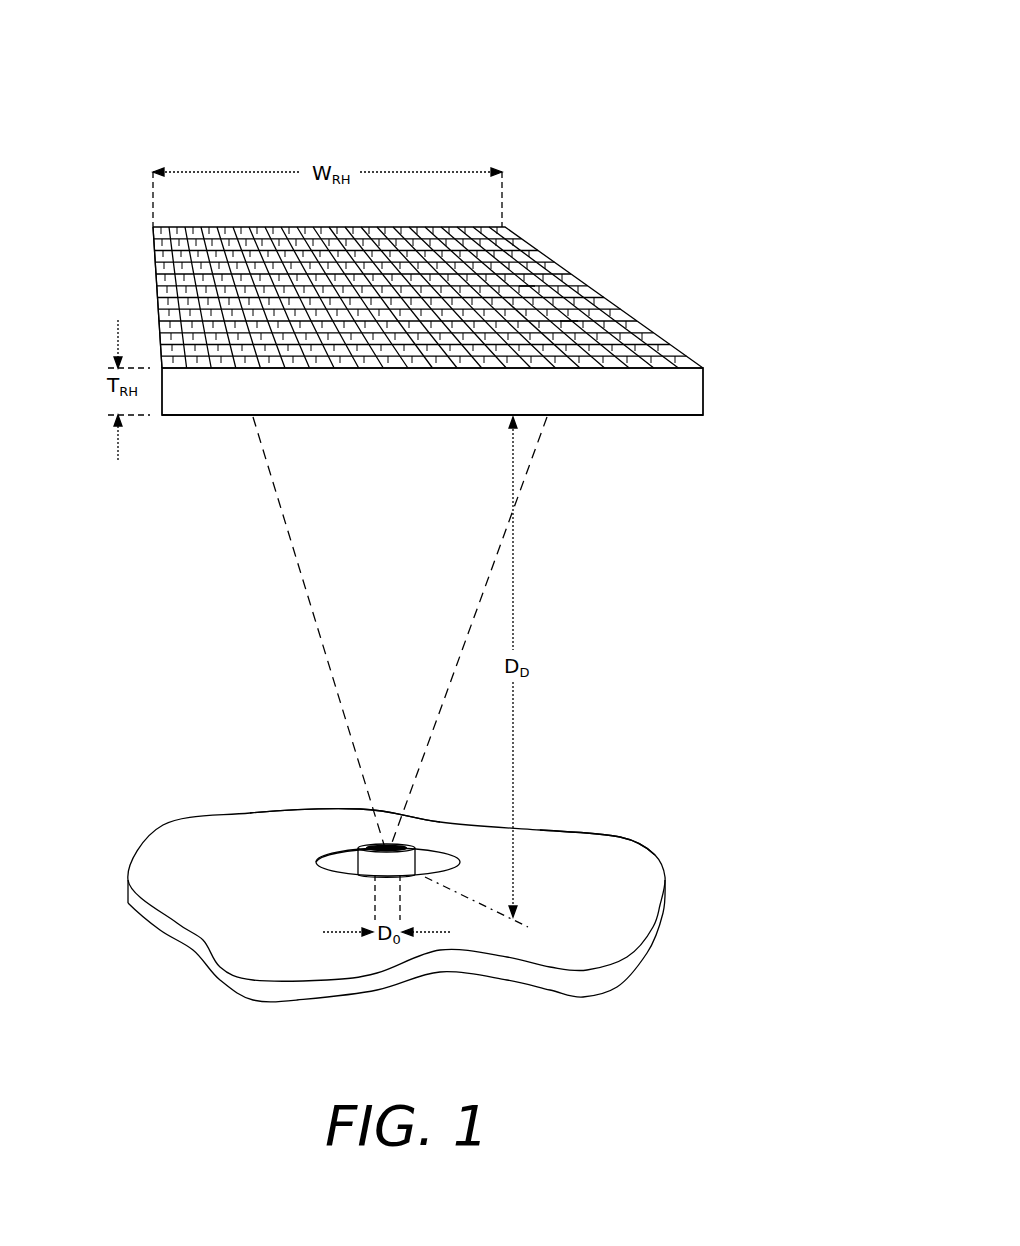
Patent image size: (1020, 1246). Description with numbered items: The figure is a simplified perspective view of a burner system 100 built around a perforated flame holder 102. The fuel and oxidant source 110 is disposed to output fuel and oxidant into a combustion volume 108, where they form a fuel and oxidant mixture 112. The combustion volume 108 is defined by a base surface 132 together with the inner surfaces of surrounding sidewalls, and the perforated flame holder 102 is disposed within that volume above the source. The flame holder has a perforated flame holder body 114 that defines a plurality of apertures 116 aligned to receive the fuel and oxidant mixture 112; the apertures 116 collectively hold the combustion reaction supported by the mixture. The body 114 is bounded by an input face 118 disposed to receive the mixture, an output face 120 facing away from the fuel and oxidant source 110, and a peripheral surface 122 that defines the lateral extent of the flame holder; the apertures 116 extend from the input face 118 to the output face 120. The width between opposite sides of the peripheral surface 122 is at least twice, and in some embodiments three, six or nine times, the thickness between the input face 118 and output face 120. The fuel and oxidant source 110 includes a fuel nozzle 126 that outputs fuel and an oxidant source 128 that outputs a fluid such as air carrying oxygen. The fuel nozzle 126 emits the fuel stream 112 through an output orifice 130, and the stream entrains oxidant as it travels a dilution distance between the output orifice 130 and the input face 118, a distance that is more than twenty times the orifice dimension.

The burner system 100 is at (582, 38).
The perforated flame holder 102 is at (703, 393).
The combustion volume 108 is at (116, 704).
The fuel and oxidant source 110 is at (305, 830).
The fuel and oxidant mixture 112 is at (338, 716).
The perforated flame holder body 114 is at (153, 262).
The apertures 116 is at (527, 280).
The input face 118 is at (243, 430).
The output face 120 is at (186, 225).
The peripheral surface 122 is at (621, 403).
The fuel nozzle 126 is at (327, 865).
The oxidant source 128 is at (328, 859).
The output orifice 130 is at (418, 850).
The base surface 132 is at (622, 862).